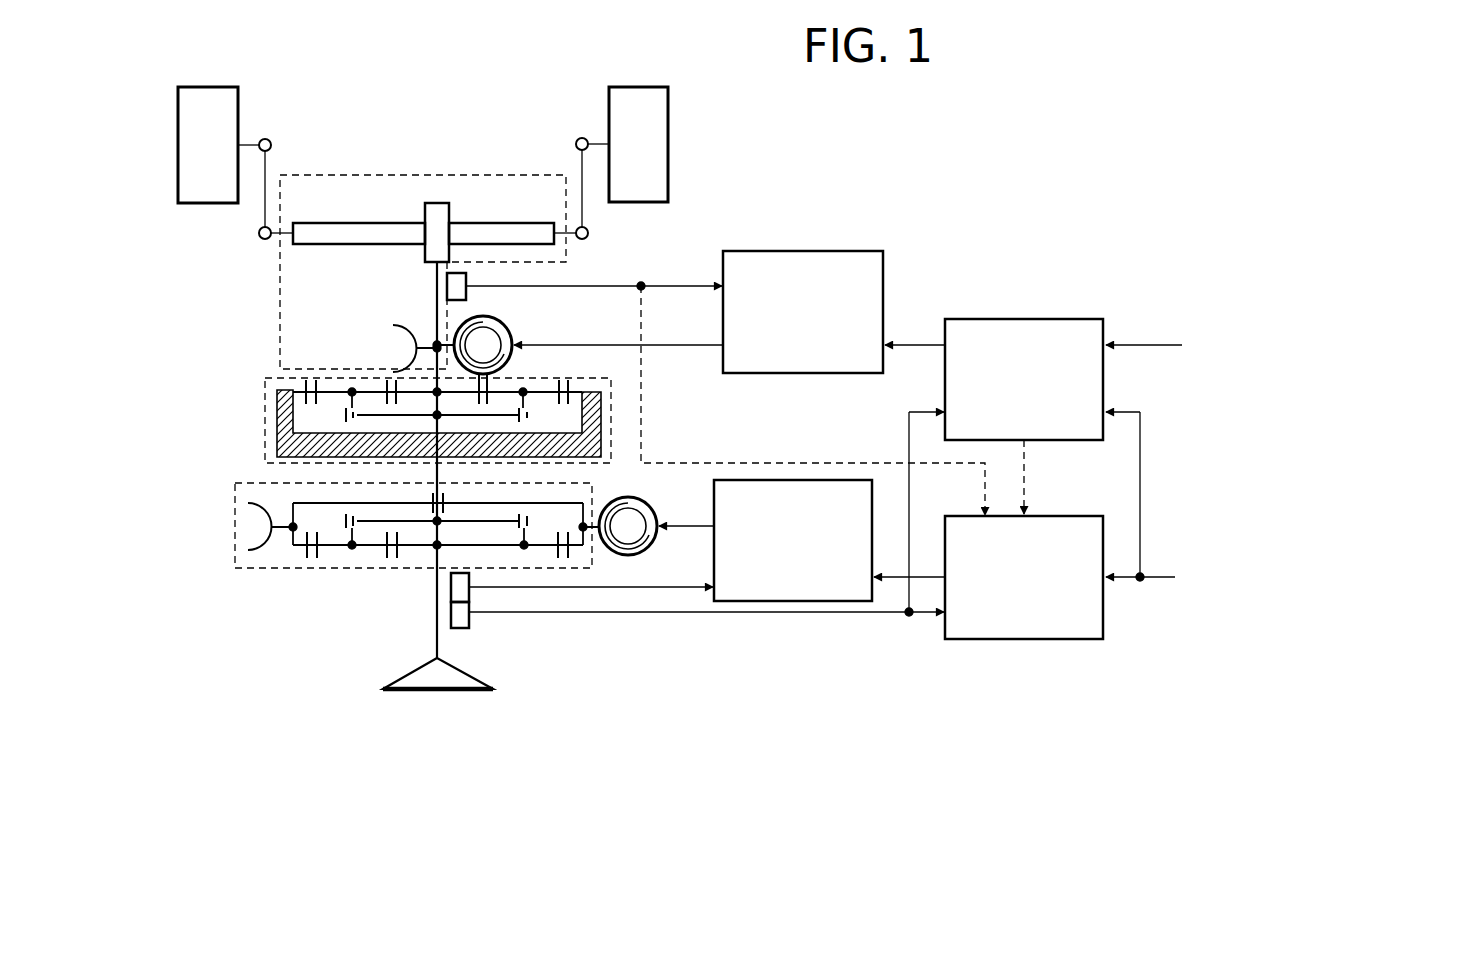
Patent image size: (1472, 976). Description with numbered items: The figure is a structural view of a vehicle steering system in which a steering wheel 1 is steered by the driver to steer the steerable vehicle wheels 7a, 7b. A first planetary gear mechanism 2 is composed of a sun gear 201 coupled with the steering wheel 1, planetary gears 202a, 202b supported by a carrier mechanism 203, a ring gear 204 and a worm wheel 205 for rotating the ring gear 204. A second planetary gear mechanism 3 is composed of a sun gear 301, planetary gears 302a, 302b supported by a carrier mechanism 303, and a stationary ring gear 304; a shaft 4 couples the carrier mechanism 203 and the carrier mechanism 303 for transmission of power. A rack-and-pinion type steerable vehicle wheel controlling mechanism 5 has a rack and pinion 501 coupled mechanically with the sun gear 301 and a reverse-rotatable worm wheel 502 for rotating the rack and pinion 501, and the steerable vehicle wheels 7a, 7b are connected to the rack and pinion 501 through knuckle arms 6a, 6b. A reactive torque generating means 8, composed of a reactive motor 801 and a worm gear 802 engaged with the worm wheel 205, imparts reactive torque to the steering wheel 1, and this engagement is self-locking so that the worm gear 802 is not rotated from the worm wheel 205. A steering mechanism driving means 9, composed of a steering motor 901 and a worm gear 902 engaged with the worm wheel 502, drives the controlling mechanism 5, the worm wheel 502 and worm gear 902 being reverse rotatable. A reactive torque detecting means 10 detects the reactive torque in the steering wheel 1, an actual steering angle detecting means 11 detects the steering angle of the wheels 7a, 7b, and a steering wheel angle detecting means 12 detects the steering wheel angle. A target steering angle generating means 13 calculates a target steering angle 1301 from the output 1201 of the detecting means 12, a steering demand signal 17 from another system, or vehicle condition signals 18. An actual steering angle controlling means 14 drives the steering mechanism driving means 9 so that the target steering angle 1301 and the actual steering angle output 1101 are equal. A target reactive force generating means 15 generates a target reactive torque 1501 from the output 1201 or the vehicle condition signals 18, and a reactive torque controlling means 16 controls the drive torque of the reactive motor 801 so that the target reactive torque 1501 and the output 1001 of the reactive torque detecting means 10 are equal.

The steering wheel 1 is at (476, 691).
The first planetary gear mechanism 2 is at (423, 569).
The second planetary gear mechanism 3 is at (455, 398).
The shaft 4 is at (437, 473).
The steerable vehicle wheel controlling mechanism 5 is at (280, 290).
The knuckle arm 6a is at (262, 139).
The knuckle arm 6b is at (584, 138).
The steerable vehicle wheel 7a is at (220, 87).
The steerable vehicle wheel 7b is at (618, 87).
The reactive torque generating means 8 is at (657, 517).
The steering mechanism driving means 9 is at (515, 345).
The reactive torque detecting means 10 is at (469, 595).
The actual steering angle detecting means 11 is at (466, 277).
The steering wheel angle detecting means 12 is at (469, 618).
The target steering angle generating means 13 is at (1079, 319).
The actual steering angle controlling means 14 is at (855, 251).
The target reactive force generating means 15 is at (1079, 516).
The reactive torque controlling means 16 is at (873, 514).
The steering demand signal 17 is at (1293, 318).
The vehicle condition signals 18 is at (1293, 535).
The sun gear 201 is at (422, 548).
The planetary gear 202a is at (336, 550).
The planetary gear 202b is at (545, 550).
The carrier mechanism 203 is at (363, 527).
The ring gear 204 is at (294, 532).
The worm wheel 205 is at (254, 552).
The sun gear 301 is at (598, 420).
The planetary gear 302a is at (333, 390).
The planetary gear 302b is at (598, 394).
The carrier mechanism 303 is at (383, 417).
The stationary ring gear 304 is at (290, 391).
The rack and pinion 501 is at (437, 205).
The worm wheel 502 is at (399, 326).
The reactive motor 801 is at (650, 517).
The worm gear 802 is at (630, 510).
The steering motor 901 is at (501, 335).
The worm gear 902 is at (490, 321).
The output of the reactive torque detecting means 1001 is at (672, 588).
The actual steering angle detecting means output 1101 is at (666, 286).
The output of the steering angle detecting means 1201 is at (775, 613).
The target steering angle 1301 is at (914, 344).
The target reactive torque 1501 is at (893, 578).